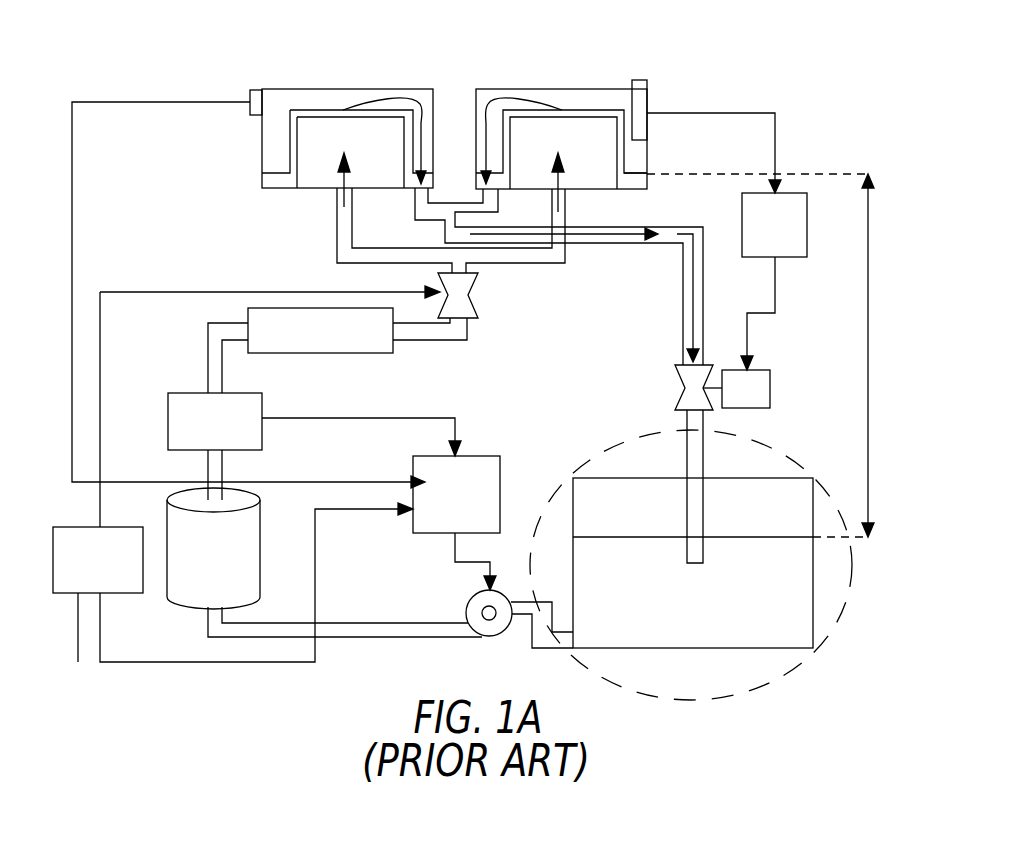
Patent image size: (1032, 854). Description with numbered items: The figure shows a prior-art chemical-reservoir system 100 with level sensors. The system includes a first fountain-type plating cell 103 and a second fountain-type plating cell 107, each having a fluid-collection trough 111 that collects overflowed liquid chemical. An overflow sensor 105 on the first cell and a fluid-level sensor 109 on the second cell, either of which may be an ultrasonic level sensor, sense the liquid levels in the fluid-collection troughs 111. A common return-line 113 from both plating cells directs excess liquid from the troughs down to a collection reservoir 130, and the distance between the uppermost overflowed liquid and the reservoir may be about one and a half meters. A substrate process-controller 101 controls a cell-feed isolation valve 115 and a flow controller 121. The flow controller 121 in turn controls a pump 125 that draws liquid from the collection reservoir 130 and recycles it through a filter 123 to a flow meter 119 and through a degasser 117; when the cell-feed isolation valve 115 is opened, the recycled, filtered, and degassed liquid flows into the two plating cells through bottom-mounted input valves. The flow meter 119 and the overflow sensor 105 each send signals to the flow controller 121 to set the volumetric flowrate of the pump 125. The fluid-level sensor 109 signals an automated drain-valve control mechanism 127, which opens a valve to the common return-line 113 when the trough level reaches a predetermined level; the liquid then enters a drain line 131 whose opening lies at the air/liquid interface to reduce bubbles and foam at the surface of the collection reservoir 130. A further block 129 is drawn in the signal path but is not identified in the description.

The chemical-reservoir system 100 is at (827, 45).
The substrate process-controller 101 is at (70, 527).
The first fountain-type plating cell 103 is at (342, 89).
The overflow sensor 105 is at (258, 90).
The second fountain-type plating cell 107 is at (572, 82).
The fluid-level sensor 109 is at (640, 80).
The fluid-collection troughs 111 is at (270, 172).
The common return-line 113 is at (487, 212).
The cell-feed isolation valve 115 is at (476, 292).
The degasser 117 is at (388, 354).
The flow meter 119 is at (190, 394).
The flow controller 121 is at (480, 456).
The filter 123 is at (258, 492).
The pump 125 is at (468, 606).
The automated drain-valve control mechanism 127 is at (772, 380).
The sensor unit 129 is at (800, 258).
The collection reservoir 130 is at (652, 432).
The drain line 131 is at (700, 564).